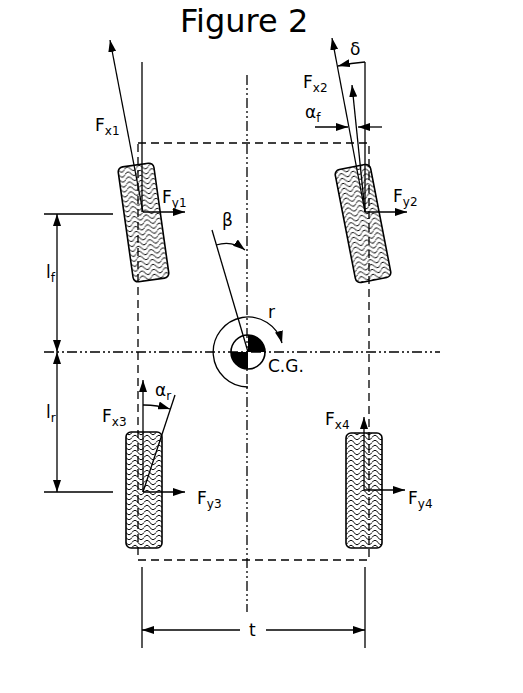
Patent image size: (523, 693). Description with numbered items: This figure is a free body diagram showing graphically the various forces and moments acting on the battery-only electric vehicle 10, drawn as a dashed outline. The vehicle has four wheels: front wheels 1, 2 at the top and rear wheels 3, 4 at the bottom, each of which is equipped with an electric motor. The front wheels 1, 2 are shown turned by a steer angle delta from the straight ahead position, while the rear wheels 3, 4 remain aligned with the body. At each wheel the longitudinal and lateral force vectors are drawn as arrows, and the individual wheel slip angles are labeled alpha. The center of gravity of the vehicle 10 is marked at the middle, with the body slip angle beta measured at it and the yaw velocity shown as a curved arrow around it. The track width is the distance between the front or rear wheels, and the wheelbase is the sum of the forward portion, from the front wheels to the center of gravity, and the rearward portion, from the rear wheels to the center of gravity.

The front wheel 1 is at (144, 223).
The front wheel 2 is at (362, 224).
The rear wheel 3 is at (144, 490).
The rear wheel 4 is at (364, 490).
The vehicle 10 is at (253, 351).